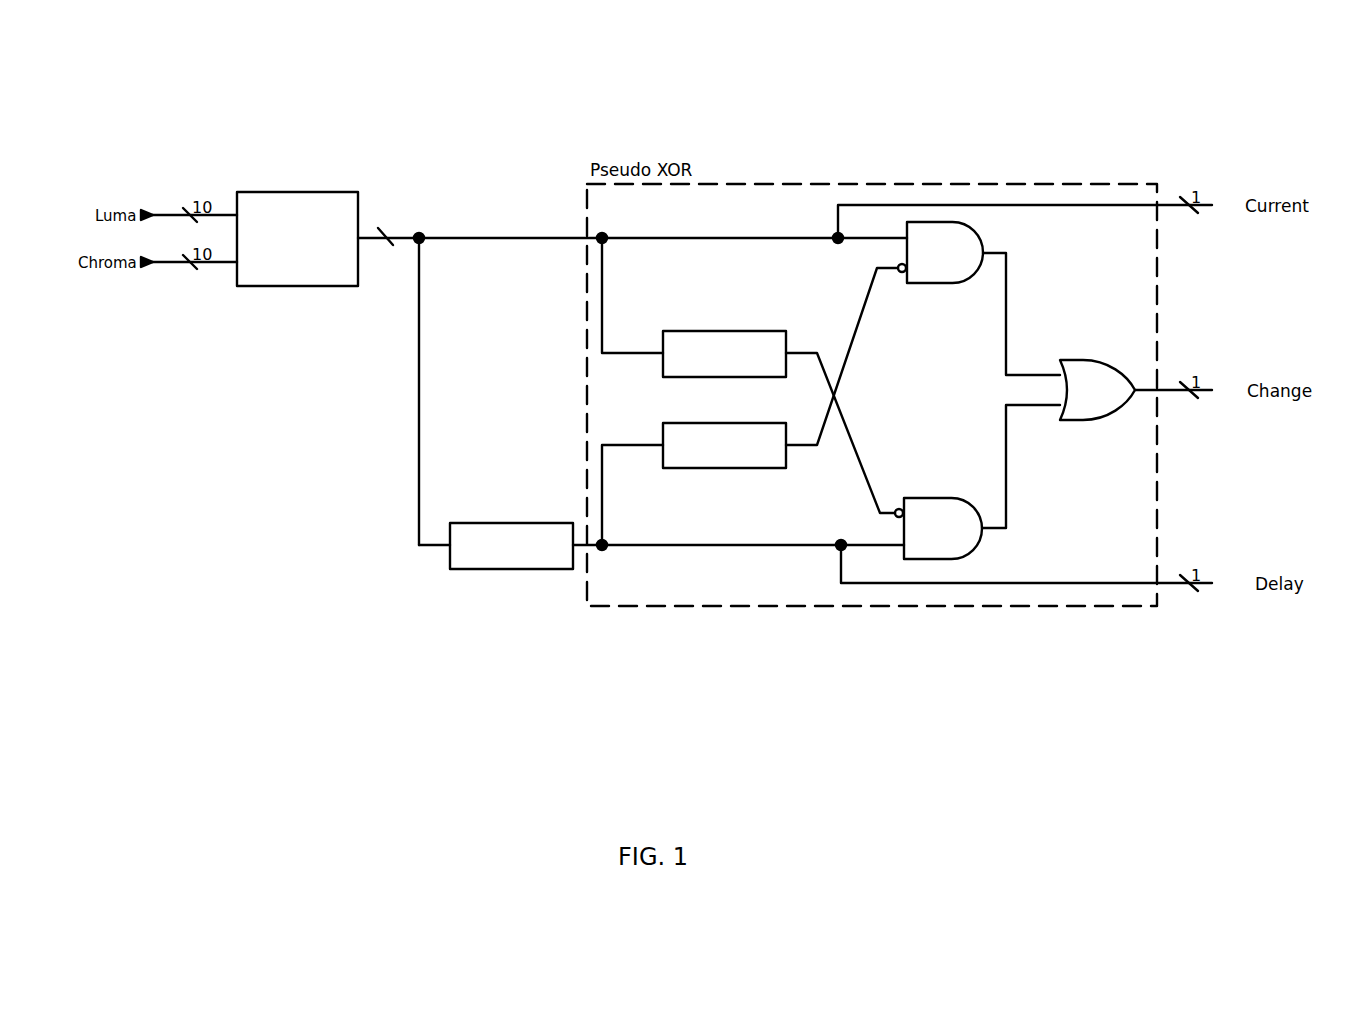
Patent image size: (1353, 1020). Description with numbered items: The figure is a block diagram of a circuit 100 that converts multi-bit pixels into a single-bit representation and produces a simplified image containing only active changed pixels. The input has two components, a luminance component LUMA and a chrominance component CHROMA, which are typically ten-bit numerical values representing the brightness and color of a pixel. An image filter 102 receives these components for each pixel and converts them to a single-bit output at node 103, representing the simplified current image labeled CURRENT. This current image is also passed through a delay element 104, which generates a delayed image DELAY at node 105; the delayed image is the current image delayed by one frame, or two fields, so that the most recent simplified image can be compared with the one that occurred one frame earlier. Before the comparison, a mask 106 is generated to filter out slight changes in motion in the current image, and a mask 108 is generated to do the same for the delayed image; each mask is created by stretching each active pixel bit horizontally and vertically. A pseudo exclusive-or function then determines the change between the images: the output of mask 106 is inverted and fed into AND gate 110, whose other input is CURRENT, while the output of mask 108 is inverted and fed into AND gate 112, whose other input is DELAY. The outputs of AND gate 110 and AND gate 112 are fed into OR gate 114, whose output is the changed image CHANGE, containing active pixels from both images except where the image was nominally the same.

The circuit 100 is at (271, 80).
The image filter 102 is at (358, 195).
The node 103 is at (419, 237).
The delay element 104 is at (508, 569).
The node 105 is at (604, 548).
The mask 106 is at (732, 468).
The mask 108 is at (728, 331).
The AND gate 110 is at (945, 222).
The AND gate 112 is at (978, 542).
The OR gate 114 is at (1097, 360).